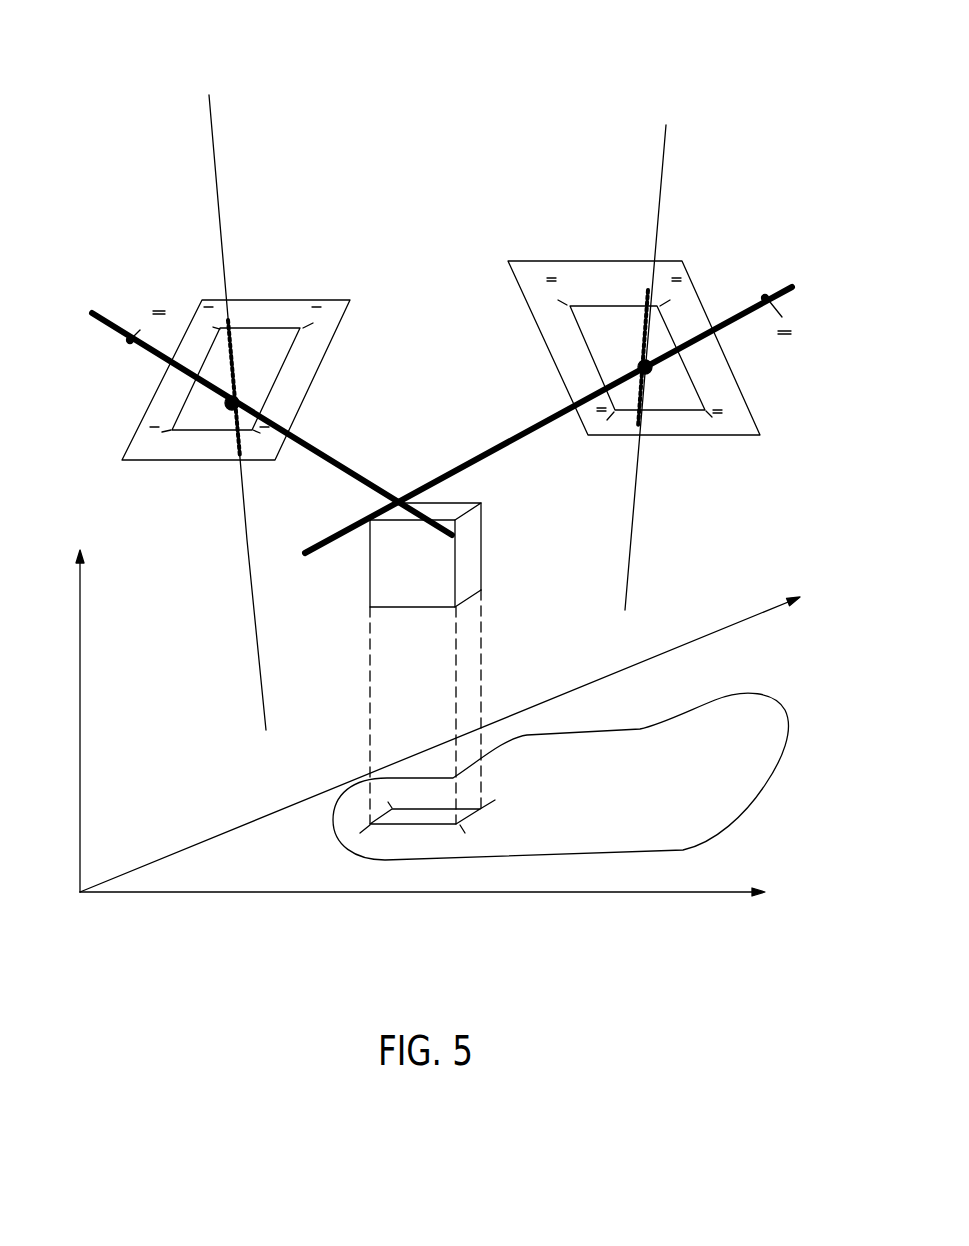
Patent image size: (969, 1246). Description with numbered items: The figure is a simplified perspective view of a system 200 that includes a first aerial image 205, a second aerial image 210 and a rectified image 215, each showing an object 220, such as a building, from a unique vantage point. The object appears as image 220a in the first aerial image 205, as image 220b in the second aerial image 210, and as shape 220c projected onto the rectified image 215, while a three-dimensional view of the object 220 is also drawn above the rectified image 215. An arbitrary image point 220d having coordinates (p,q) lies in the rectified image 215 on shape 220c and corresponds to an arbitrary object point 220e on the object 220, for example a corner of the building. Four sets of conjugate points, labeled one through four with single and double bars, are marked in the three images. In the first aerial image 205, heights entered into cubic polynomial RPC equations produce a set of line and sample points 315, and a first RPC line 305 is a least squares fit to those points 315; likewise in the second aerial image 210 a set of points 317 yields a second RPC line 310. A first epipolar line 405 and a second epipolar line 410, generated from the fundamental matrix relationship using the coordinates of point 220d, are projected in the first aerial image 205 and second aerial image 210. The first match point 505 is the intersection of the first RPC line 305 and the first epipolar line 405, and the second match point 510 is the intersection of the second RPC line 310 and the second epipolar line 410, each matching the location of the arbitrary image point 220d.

The system 200 is at (266, 1014).
The first aerial image 205 is at (328, 293).
The second aerial image 210 is at (538, 260).
The rectified image 215 is at (732, 838).
The object 220 is at (487, 566).
The image of object in first aerial image 220a is at (280, 380).
The image of object in second aerial image 220b is at (695, 382).
The image of object in rectified image 220c is at (480, 817).
The arbitrary image point 220d is at (368, 806).
The arbitrary object point 220e is at (382, 503).
The first RPC line 305 is at (258, 677).
The second RPC line 310 is at (633, 512).
The set of points in first aerial image 315 is at (233, 345).
The set of points in second aerial image 317 is at (643, 320).
The first epipolar line 405 is at (93, 323).
The second epipolar line 410 is at (785, 282).
The first match point 505 is at (220, 410).
The second match point 510 is at (653, 375).